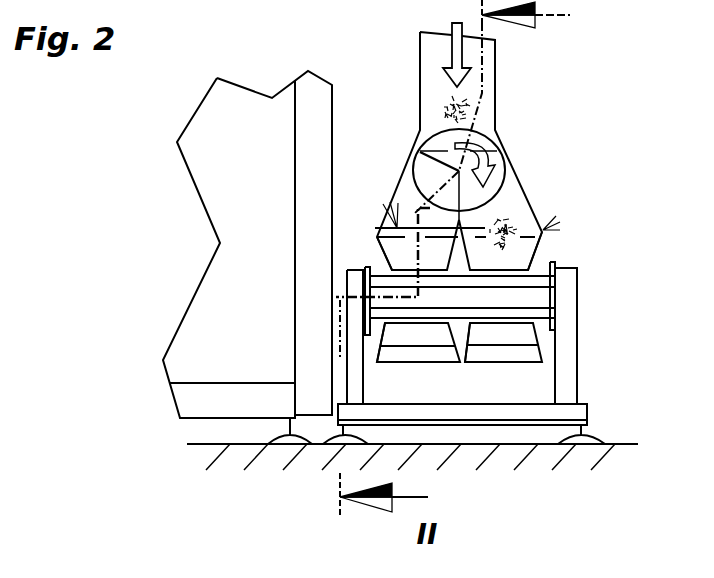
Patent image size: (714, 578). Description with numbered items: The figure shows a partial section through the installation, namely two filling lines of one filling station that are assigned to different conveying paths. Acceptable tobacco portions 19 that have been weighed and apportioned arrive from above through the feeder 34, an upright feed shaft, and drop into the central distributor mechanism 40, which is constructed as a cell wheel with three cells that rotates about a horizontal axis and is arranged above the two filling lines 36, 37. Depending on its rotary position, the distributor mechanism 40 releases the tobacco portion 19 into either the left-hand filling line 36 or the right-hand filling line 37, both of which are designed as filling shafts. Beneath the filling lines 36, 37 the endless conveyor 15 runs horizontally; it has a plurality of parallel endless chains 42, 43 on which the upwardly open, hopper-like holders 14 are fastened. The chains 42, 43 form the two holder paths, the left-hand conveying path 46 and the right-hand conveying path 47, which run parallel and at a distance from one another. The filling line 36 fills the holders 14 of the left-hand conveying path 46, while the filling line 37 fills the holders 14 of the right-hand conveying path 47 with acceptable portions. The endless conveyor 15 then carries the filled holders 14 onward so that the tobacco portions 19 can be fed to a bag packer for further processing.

The holder 14 is at (495, 500).
The endless conveyor 15 is at (503, 343).
The tobacco portion 19 is at (510, 207).
The feeder 34 is at (492, 62).
The filling line 36 is at (408, 182).
The filling line 37 is at (522, 170).
The central distributor mechanism 40 is at (440, 143).
The endless chain 42 is at (420, 348).
The endless chain 43 is at (502, 262).
The left-hand conveying path 46 is at (412, 207).
The right-hand conveying path 47 is at (545, 222).